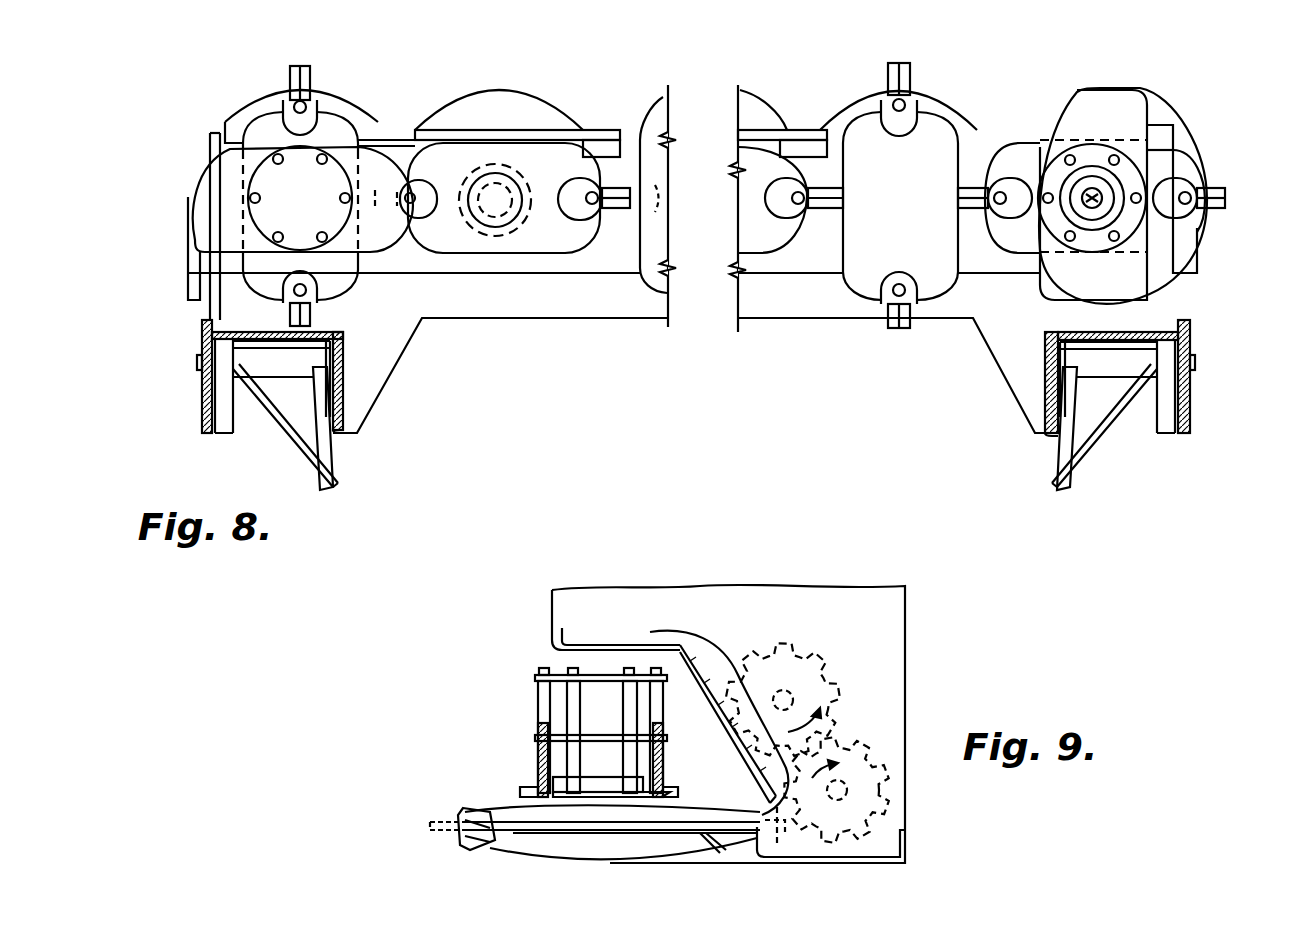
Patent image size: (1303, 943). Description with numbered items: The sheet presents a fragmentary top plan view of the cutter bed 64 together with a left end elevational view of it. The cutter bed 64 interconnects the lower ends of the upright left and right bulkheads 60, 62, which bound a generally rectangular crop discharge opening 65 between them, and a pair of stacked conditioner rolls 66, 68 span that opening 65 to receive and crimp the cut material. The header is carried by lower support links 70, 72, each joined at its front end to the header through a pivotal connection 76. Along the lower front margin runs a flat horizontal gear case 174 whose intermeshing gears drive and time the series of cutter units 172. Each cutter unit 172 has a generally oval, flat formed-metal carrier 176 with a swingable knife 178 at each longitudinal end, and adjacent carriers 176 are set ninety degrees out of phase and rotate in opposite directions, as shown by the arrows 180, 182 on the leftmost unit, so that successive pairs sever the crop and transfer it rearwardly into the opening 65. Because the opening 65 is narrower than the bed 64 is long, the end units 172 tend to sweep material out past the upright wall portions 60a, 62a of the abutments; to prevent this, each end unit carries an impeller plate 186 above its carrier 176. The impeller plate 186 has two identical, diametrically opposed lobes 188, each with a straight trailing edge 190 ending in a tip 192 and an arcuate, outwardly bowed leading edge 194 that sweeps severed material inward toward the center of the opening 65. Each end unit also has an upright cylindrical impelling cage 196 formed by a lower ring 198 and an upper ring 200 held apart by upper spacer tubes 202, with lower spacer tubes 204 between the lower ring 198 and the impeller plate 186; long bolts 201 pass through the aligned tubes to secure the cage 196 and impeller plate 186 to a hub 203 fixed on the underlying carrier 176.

In FIG. 8, the left bulkhead 60 is at (1045, 410).
In FIG. 8, the upright wall portion 60a is at (1103, 332).
In FIG. 8, the right bulkhead 62 is at (343, 397).
In FIG. 9, the right bulkhead 62 is at (893, 607).
In FIG. 8, the upright wall portion 62a is at (245, 333).
In FIG. 8, the cutter bed 64 is at (1195, 138).
In FIG. 9, the cutter bed 64 is at (585, 860).
In FIG. 8, the crop discharge opening 65 is at (395, 343).
In FIG. 9, the upper conditioner roll 66 is at (828, 655).
In FIG. 9, the lower conditioner roll 68 is at (892, 793).
In FIG. 8, the lower support link 70 is at (1055, 476).
In FIG. 8, the lower support link 72 is at (335, 470).
In FIG. 8, the pivotal connection 76 is at (195, 362).
In FIG. 8, the cutter unit 172 is at (588, 137).
In FIG. 8, the gear case 174 is at (787, 290).
In FIG. 8, the carrier 176 is at (515, 155).
In FIG. 9, the carrier 176 is at (460, 793).
In FIG. 8, the knife 178 is at (290, 80).
In FIG. 9, the knife 178 is at (445, 832).
In FIG. 8, the arrow 180 is at (300, 78).
In FIG. 8, the arrow 182 is at (408, 103).
In FIG. 8, the impeller plate 186 is at (195, 212).
In FIG. 9, the impeller plate 186 is at (530, 788).
In FIG. 8, the lobe 188 is at (1120, 105).
In FIG. 8, the trailing edge 190 is at (1165, 118).
In FIG. 8, the tip 192 is at (1142, 92).
In FIG. 8, the leading edge 194 is at (1072, 100).
In FIG. 8, the impelling cage 196 is at (240, 186).
In FIG. 9, the impelling cage 196 is at (512, 704).
In FIG. 9, the lower ring 198 is at (536, 740).
In FIG. 9, the upper ring 200 is at (560, 672).
In FIG. 9, the bolt 201 is at (700, 665).
In FIG. 9, the upper spacer tube 202 is at (538, 693).
In FIG. 9, the hub 203 is at (618, 805).
In FIG. 9, the lower spacer tube 204 is at (660, 768).